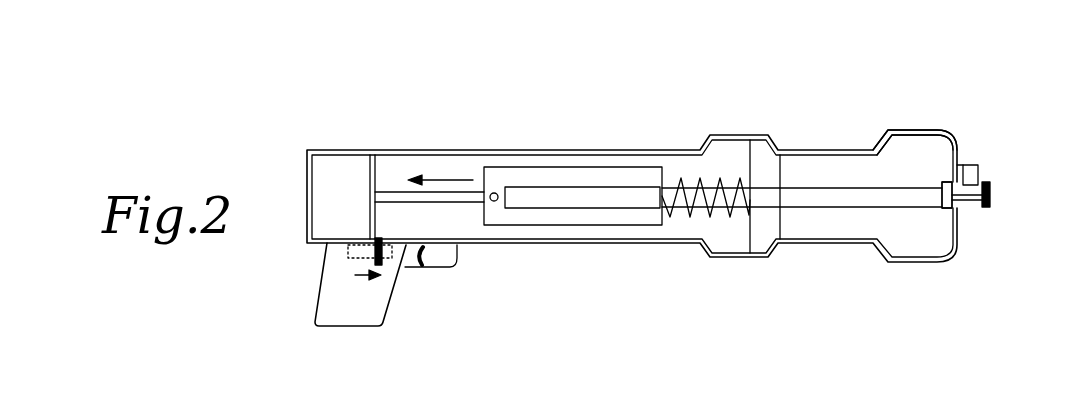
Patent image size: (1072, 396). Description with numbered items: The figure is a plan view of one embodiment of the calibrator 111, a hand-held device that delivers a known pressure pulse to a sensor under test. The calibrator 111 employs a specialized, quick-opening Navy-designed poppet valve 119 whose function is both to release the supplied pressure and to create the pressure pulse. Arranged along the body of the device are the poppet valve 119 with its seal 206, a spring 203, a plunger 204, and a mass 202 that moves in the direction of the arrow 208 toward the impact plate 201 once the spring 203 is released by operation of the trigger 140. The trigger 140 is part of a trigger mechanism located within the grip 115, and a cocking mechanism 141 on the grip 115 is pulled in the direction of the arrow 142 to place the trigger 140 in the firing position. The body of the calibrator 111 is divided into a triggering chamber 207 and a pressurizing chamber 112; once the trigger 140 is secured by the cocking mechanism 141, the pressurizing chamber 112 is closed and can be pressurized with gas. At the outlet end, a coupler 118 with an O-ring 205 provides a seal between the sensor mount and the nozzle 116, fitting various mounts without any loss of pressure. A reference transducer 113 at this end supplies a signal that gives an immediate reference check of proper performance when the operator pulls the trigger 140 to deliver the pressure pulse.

The calibrator 111 is at (532, 68).
The pressurizing chamber 112 is at (832, 239).
The reference transducer 113 is at (970, 160).
The grip 115 is at (396, 305).
The nozzle 116 is at (968, 203).
The coupler 118 is at (920, 128).
The poppet valve 119 is at (755, 246).
The trigger 140 is at (432, 262).
The cocking mechanism 141 is at (372, 260).
The arrow 142 is at (348, 281).
The impact plate 201 is at (365, 154).
The mass 202 is at (516, 166).
The spring 203 is at (683, 176).
The plunger 204 is at (800, 180).
The O-ring 205 is at (990, 207).
The seal 206 is at (953, 207).
The triggering chamber 207 is at (497, 239).
The arrow 208 is at (435, 176).